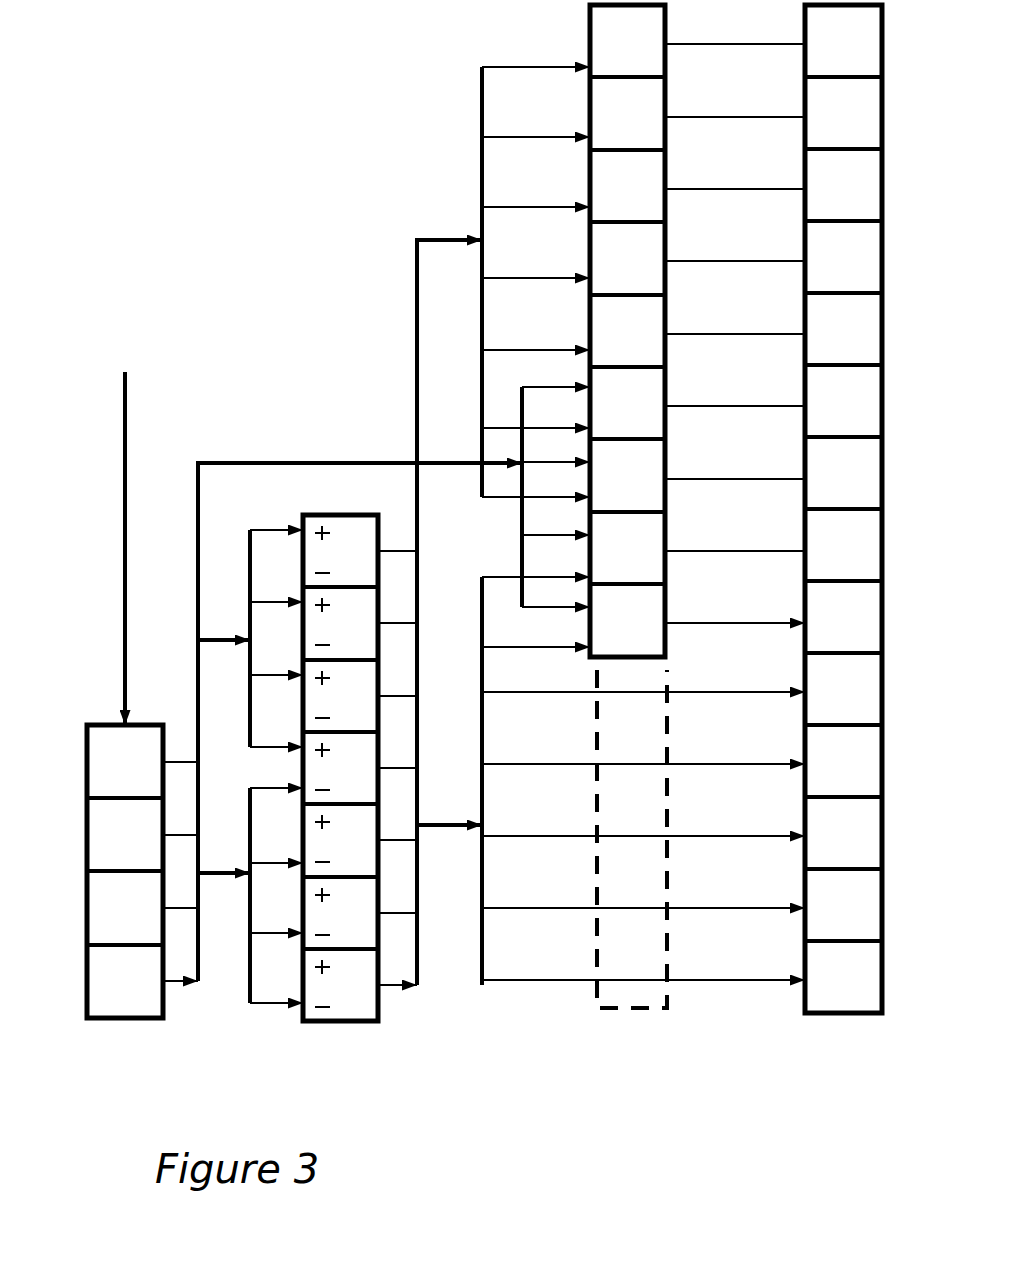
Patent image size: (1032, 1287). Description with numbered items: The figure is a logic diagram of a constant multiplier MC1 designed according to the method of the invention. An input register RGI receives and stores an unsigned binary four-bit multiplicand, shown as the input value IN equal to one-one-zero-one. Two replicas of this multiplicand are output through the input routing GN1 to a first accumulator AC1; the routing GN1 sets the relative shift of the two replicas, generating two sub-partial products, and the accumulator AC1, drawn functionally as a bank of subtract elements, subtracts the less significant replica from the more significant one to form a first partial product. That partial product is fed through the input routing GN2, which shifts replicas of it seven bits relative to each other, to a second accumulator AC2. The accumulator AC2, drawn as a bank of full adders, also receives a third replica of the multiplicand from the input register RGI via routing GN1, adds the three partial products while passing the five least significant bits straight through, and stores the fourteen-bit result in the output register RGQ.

The constant multiplier MC1 is at (295, 92).
The input value IN is at (182, 531).
The input register RGI is at (142, 890).
The input routing GN1 is at (360, 719).
The first accumulator AC1 is at (360, 788).
The input routing GN2 is at (598, 526).
The second accumulator AC2 is at (697, 530).
The output register RGQ is at (843, 530).